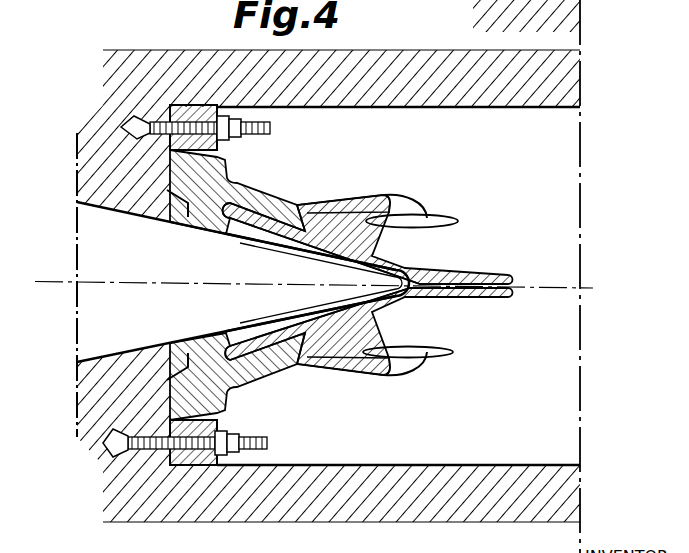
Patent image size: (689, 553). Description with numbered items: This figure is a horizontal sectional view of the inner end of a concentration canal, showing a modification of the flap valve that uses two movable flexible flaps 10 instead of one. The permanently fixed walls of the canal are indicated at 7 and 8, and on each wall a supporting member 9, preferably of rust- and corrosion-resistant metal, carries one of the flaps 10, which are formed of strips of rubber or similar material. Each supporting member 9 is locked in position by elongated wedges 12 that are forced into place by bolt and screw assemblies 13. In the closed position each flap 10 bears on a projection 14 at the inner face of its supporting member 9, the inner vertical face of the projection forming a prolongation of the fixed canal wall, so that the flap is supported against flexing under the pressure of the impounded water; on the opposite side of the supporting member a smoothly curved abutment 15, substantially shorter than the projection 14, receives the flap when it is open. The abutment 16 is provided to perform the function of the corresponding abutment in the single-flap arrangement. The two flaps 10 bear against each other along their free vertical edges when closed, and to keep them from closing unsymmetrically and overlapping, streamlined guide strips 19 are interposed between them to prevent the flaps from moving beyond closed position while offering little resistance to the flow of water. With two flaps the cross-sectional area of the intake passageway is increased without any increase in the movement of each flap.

The permanently fixed wall 7 is at (138, 214).
The permanently fixed wall 8 is at (132, 350).
The supporting member 9 is at (213, 213).
The movable flexible flap 10 is at (453, 283).
The elongated wedge 12 is at (199, 148).
The bolt and screw assembly 13 is at (265, 129).
The projection 14 is at (268, 332).
The curved abutment 15 is at (312, 213).
The abutment 16 is at (427, 220).
The guide strip 19 is at (320, 252).